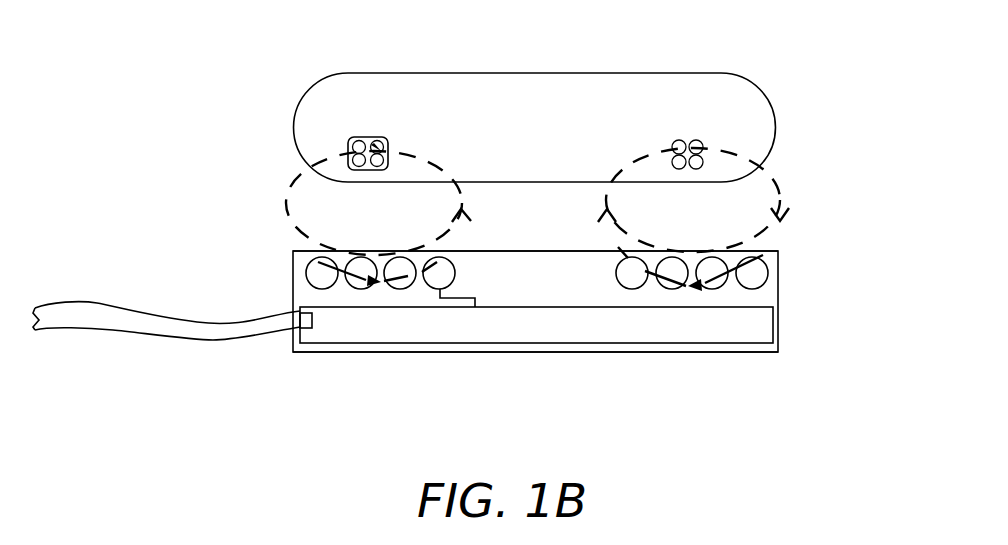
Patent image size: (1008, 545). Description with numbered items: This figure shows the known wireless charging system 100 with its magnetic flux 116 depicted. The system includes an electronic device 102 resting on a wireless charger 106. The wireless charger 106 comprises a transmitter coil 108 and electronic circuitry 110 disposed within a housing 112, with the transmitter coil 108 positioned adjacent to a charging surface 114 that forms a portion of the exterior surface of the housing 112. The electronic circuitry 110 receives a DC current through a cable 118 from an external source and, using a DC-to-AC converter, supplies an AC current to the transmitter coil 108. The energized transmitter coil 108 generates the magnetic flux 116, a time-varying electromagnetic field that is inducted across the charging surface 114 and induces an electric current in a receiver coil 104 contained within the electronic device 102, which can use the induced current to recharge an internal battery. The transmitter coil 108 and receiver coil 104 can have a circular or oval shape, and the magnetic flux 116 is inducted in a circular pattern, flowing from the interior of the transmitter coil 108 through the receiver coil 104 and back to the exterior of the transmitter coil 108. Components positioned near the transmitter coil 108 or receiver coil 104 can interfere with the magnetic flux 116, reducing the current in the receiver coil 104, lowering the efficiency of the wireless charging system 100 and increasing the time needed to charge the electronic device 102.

The wireless charging system 100 is at (112, 112).
The electronic device 102 is at (782, 84).
The receiver coil 104 is at (346, 152).
The wireless charger 106 is at (258, 272).
The transmitter coil 108 is at (768, 281).
The electronic circuitry 110 is at (543, 334).
The housing 112 is at (782, 353).
The charging surface 114 is at (490, 250).
The magnetic flux 116 is at (293, 214).
The cable 118 is at (202, 338).